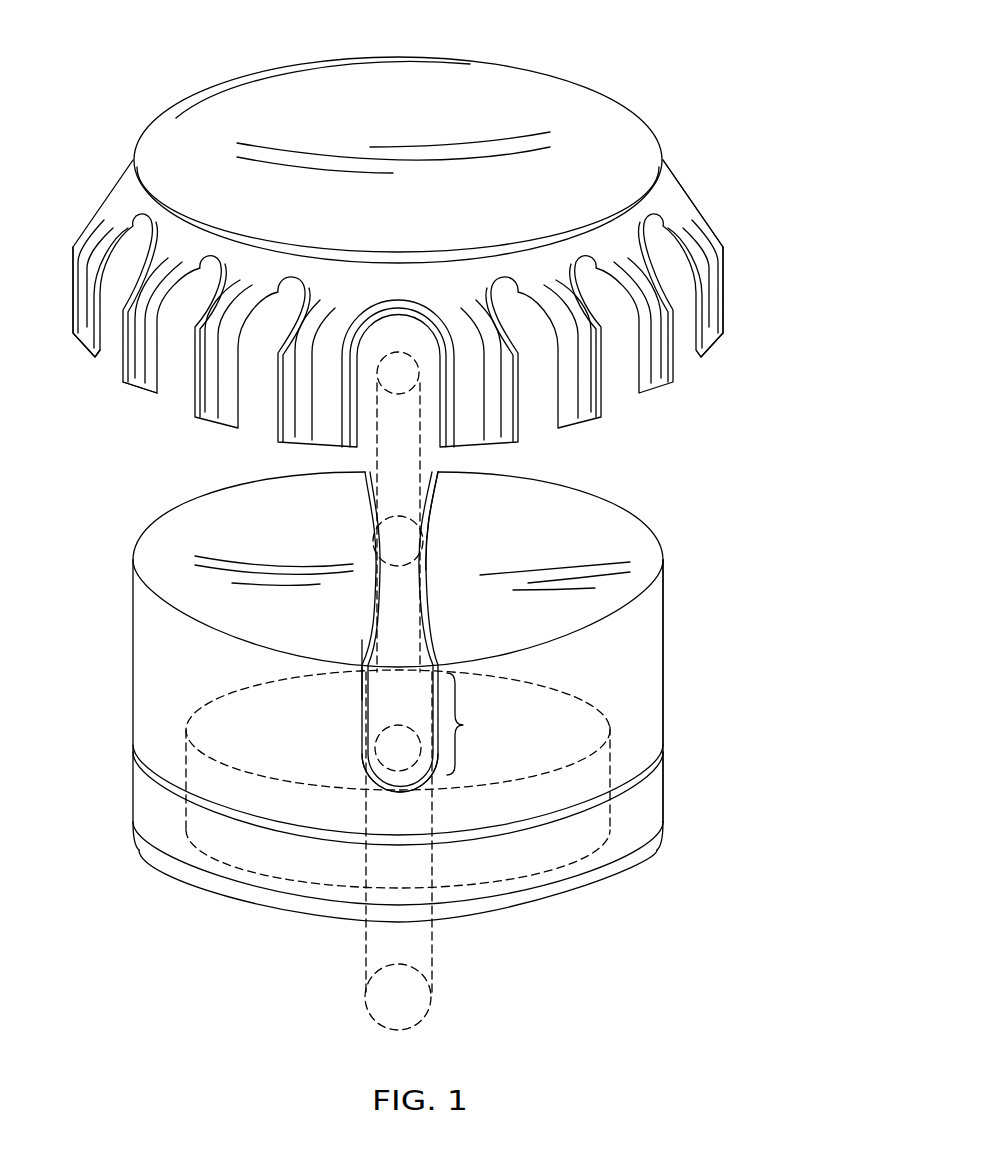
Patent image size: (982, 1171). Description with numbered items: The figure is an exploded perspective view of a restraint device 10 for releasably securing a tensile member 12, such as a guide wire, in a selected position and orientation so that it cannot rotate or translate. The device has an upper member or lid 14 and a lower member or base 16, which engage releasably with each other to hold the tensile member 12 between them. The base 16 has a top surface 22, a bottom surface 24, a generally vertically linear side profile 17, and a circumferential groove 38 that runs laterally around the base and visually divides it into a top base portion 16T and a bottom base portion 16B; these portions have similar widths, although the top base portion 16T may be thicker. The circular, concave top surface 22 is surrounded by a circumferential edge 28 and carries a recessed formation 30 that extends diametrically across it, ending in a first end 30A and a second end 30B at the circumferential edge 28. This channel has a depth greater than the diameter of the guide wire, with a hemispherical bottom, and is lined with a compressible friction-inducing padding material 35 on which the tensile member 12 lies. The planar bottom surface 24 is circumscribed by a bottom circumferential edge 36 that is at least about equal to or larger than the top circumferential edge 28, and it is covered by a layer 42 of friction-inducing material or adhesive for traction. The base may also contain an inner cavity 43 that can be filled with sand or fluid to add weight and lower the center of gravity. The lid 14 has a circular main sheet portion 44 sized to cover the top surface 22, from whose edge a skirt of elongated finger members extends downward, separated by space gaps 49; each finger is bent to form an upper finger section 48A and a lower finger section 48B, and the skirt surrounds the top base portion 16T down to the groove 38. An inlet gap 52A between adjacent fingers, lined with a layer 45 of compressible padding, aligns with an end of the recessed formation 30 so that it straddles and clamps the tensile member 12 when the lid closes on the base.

The restraint device 10 is at (780, 515).
The tensile member 12 is at (418, 1000).
The lid 14 is at (692, 148).
The base 16 is at (705, 729).
The top base portion 16T is at (675, 569).
The bottom base portion 16B is at (684, 754).
The side profile 17 is at (132, 655).
The top surface 22 is at (258, 530).
The bottom surface 24 is at (545, 893).
The circumferential edge 28 is at (642, 530).
The recessed formation 30 is at (408, 680).
The first end 30A is at (360, 665).
The second end 30B is at (443, 466).
The padding material 35 is at (363, 740).
The bottom circumferential edge 36 is at (643, 855).
The circumferential groove 38 is at (153, 781).
The layer of friction-inducing material 42 is at (593, 893).
The inner cavity 43 is at (282, 873).
The main sheet portion 44 is at (459, 78).
The layer of padding material 45 is at (397, 308).
The upper finger section 48A is at (712, 222).
The lower finger section 48B is at (727, 303).
The space gaps 49 is at (108, 333).
The inlet gap 52A is at (347, 313).